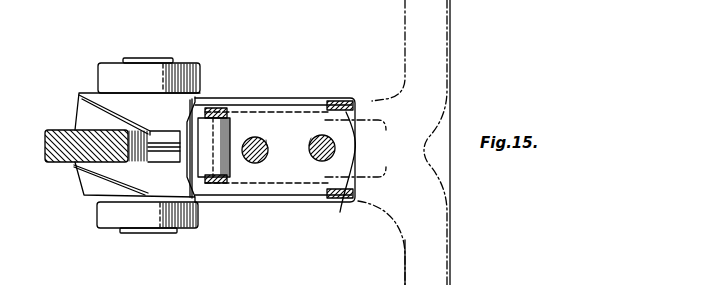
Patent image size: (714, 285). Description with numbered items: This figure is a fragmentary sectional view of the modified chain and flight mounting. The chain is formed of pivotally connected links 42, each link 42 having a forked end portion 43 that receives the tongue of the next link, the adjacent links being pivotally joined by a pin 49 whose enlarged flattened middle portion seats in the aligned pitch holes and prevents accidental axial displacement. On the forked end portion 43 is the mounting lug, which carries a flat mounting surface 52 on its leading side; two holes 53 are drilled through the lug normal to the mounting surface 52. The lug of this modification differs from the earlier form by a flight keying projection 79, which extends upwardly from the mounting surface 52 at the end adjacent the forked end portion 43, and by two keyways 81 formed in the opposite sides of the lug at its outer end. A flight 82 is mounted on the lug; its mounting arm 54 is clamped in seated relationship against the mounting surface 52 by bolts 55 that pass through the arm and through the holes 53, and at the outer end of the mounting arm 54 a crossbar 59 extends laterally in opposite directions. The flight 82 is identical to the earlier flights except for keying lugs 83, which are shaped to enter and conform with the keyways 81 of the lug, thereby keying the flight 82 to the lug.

The link 42 is at (57, 163).
The forked end portion 43 is at (113, 218).
The pin 49 is at (146, 235).
The mounting surface 52 is at (288, 98).
The holes 53 is at (314, 156).
The bolts 55 is at (318, 141).
The flight keying projection 79 is at (213, 118).
The keyways 81 is at (356, 139).
The keying lugs 83 is at (336, 101).
The mounting arm 54 is at (371, 95).
The flight 82 is at (452, 42).
The crossbar 59 is at (431, 263).